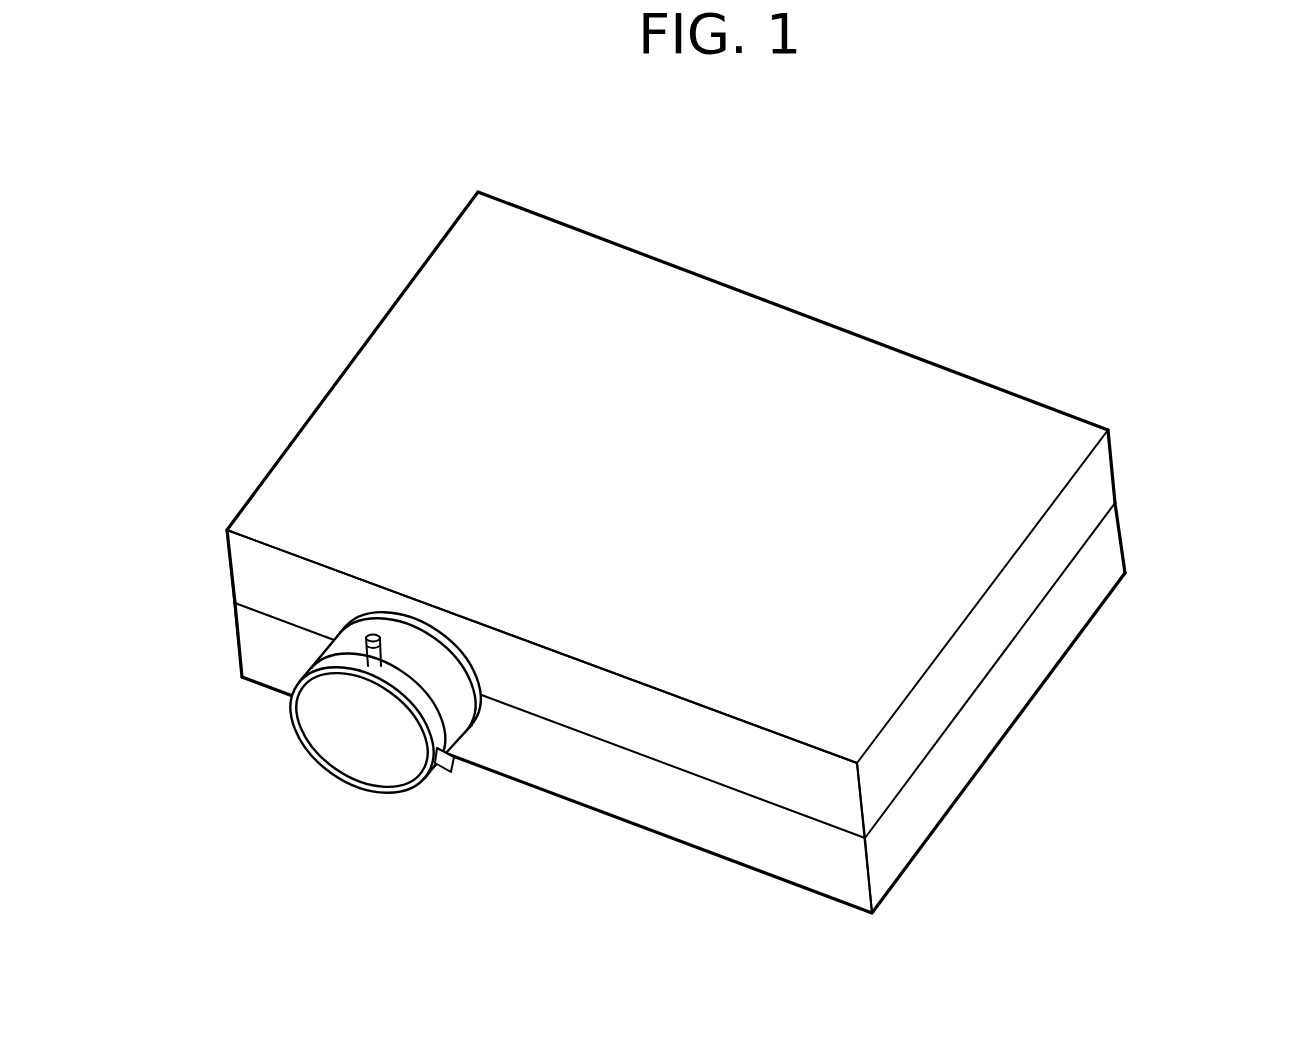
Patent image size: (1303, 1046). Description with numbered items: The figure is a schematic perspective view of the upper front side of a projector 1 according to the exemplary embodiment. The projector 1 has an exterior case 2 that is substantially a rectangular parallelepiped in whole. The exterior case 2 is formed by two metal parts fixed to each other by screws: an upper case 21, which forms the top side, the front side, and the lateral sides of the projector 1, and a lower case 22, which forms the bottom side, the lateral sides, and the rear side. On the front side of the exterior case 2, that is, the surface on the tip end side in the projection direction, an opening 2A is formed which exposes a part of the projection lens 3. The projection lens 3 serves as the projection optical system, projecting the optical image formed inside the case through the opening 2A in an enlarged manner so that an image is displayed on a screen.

The projector 1 is at (740, 522).
The exterior case 2 is at (740, 552).
The upper case 21 is at (1075, 528).
The lower case 22 is at (1075, 612).
The opening 2A is at (475, 710).
The projection lens 3 is at (305, 742).